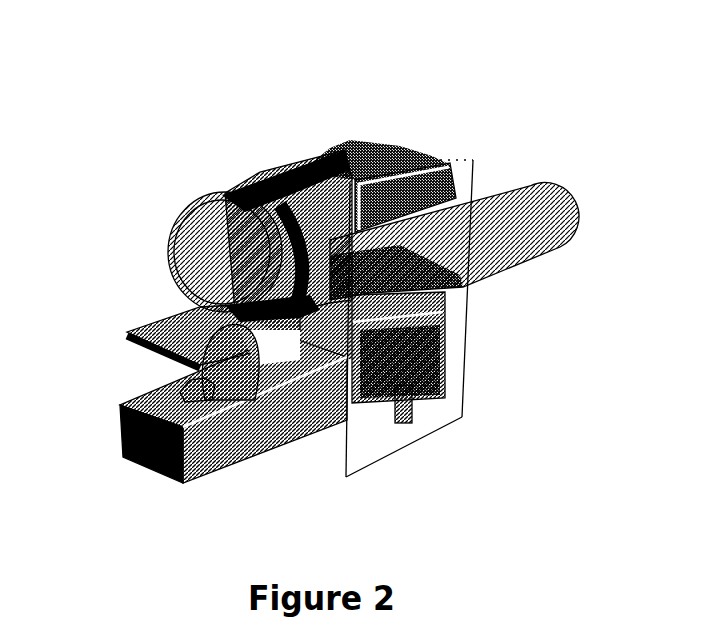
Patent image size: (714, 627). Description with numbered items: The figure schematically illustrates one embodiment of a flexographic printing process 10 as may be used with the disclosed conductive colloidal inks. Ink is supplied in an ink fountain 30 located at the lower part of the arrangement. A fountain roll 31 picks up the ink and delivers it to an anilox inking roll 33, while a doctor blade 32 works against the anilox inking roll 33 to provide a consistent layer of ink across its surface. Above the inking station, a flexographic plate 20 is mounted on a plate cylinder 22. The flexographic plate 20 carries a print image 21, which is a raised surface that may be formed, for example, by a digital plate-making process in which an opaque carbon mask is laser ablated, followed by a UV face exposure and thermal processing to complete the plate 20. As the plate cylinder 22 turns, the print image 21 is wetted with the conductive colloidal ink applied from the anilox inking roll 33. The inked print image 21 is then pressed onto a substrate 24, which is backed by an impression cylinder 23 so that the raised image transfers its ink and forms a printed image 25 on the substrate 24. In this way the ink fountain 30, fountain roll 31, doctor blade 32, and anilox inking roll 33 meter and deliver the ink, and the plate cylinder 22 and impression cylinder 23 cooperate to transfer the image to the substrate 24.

The flexographic printing process 10 is at (153, 74).
The flexographic plate 20 is at (271, 165).
The print image 21 is at (385, 151).
The plate cylinder 22 is at (204, 227).
The impression cylinder 23 is at (370, 286).
The substrate 24 is at (478, 161).
The printed image 25 is at (419, 403).
The ink fountain 30 is at (125, 458).
The fountain roll 31 is at (182, 389).
The doctor blade 32 is at (156, 325).
The anilox inking roll 33 is at (238, 380).